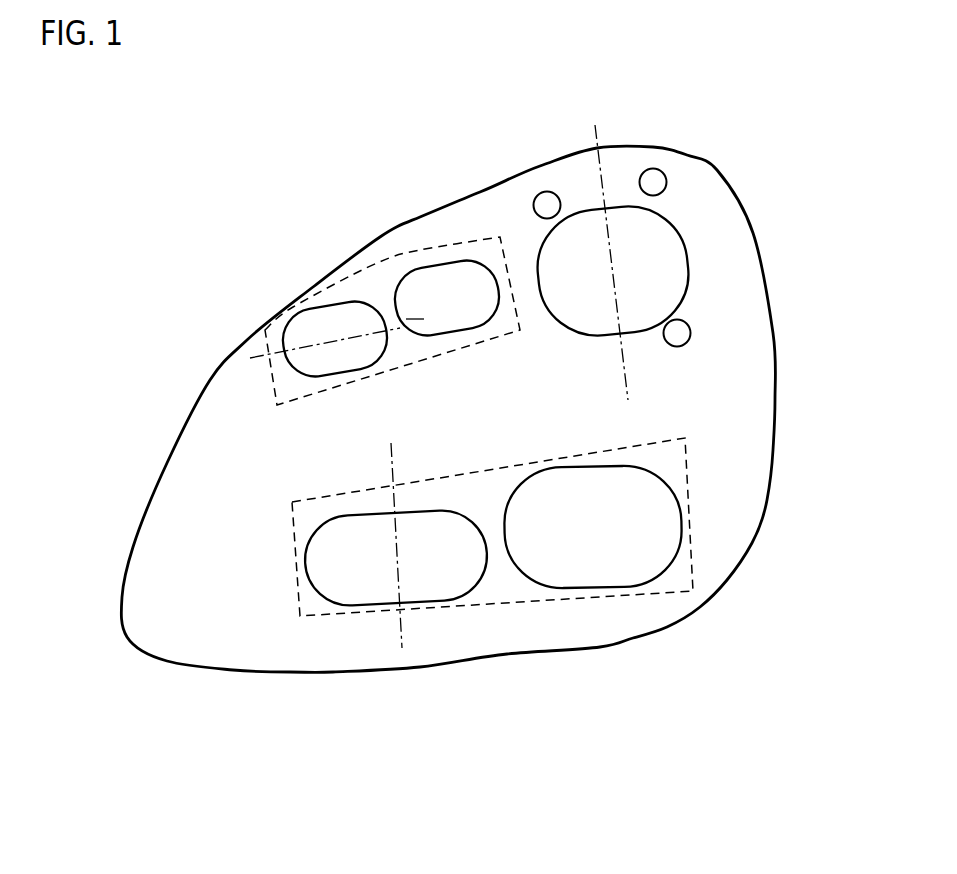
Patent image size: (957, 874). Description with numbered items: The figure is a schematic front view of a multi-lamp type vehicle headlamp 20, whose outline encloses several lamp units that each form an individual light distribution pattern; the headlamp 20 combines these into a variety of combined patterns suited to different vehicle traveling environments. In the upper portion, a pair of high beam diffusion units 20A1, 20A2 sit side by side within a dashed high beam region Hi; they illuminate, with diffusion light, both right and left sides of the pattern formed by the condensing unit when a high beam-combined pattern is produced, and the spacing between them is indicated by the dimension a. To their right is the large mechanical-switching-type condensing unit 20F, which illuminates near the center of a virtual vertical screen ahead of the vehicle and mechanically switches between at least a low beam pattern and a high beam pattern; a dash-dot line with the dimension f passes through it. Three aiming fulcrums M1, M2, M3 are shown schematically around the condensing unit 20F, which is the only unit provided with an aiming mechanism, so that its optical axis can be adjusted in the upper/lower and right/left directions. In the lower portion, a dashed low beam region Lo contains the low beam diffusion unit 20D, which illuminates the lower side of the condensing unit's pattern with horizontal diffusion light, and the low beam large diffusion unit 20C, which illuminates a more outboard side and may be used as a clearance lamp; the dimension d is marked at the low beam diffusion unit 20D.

The vehicle headlamp 20 is at (105, 151).
The high beam diffusion unit 20A1 is at (328, 320).
The high beam diffusion unit 20A2 is at (453, 277).
The mechanical-switching-type condensing unit 20F is at (652, 253).
The low beam large diffusion unit 20C is at (580, 563).
The low beam diffusion unit 20D is at (353, 577).
The aiming fulcrum M1 is at (544, 206).
The aiming fulcrum M2 is at (652, 182).
The aiming fulcrum M3 is at (678, 333).
The dimension a is at (255, 352).
The dimension f is at (597, 127).
The dimension d is at (394, 450).
The high-beam region Hi is at (273, 384).
The low-beam region Lo is at (688, 478).